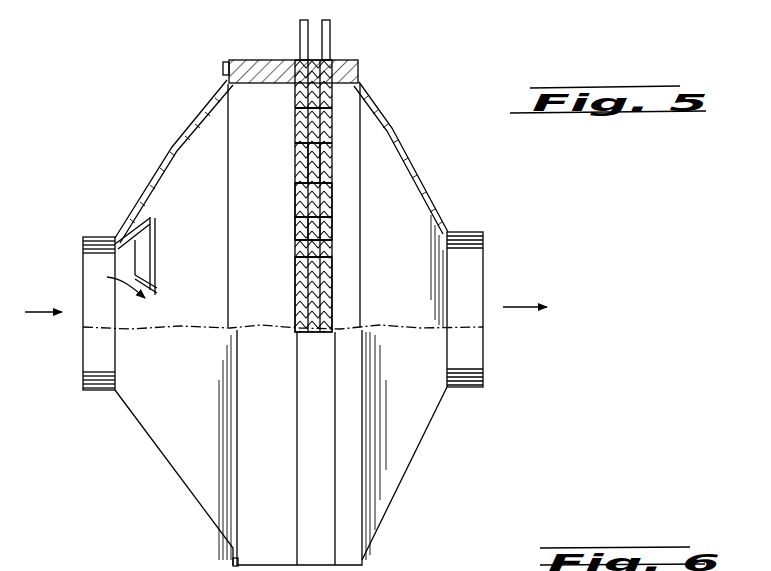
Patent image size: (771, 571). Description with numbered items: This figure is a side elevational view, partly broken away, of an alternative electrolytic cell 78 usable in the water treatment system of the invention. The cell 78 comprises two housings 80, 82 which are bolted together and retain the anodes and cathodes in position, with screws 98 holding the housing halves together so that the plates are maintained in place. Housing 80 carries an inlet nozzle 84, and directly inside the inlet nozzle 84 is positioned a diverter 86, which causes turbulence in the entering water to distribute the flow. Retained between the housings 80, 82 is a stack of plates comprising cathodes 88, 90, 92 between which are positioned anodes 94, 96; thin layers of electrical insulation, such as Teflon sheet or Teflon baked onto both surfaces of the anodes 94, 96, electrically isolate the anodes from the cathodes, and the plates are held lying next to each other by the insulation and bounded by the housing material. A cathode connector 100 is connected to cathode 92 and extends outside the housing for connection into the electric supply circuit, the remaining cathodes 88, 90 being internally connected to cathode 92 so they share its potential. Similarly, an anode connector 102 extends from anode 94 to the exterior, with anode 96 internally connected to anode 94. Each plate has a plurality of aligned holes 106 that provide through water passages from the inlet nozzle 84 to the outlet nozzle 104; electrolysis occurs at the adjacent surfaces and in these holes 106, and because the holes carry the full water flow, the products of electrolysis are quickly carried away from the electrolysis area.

The cell 78 is at (450, 125).
The housing 80 is at (172, 148).
The housing 82 is at (428, 196).
The inlet nozzle 84 is at (104, 236).
The diverter 86 is at (136, 242).
The cathode 88 is at (300, 173).
The cathode 90 is at (308, 209).
The cathode 92 is at (302, 239).
The anode 94 is at (332, 176).
The anode 96 is at (322, 232).
The screws 98 is at (226, 64).
The cathode connector 100 is at (331, 43).
The anode connector 102 is at (299, 29).
The outlet nozzle 104 is at (473, 232).
The holes 106 is at (336, 292).